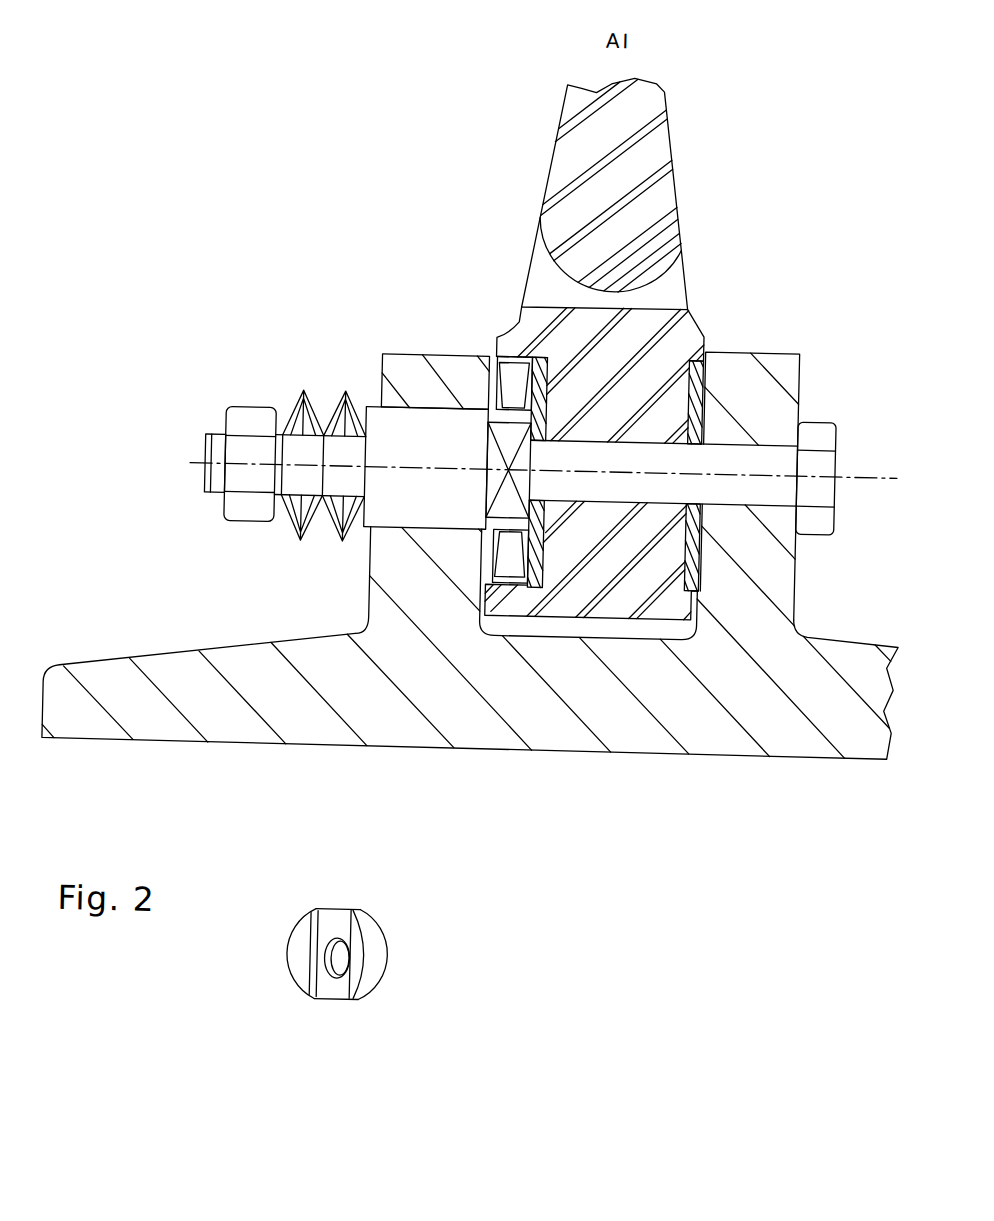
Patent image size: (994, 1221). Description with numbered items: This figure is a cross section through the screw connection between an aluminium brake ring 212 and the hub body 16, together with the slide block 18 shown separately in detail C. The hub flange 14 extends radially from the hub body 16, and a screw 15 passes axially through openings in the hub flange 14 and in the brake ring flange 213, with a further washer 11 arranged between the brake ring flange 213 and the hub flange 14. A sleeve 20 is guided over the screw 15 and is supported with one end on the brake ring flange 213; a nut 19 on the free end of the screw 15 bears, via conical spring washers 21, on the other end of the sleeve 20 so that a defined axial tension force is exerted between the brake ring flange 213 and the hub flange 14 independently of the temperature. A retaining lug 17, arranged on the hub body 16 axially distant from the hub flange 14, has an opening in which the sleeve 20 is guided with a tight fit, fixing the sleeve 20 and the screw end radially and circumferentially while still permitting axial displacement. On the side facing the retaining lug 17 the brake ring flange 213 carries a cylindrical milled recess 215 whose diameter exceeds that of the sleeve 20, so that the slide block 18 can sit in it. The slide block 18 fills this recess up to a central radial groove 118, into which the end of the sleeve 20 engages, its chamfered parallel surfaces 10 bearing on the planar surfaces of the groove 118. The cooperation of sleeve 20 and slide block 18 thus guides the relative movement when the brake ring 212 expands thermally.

The parallel surface 10 is at (484, 406).
The washer 11 is at (695, 383).
The hub flange 14 is at (783, 367).
The screw 15 is at (819, 435).
The hub body 16 is at (404, 727).
The retaining lug 17 is at (401, 605).
The slide block 18 is at (514, 324).
The nut 19 is at (236, 426).
The sleeve 20 is at (379, 428).
The conical spring washers 21 is at (296, 398).
The central groove 118 is at (344, 916).
The brake ring 212 is at (661, 290).
The brake ring flange 213 is at (674, 350).
The milled recess 215 is at (492, 341).